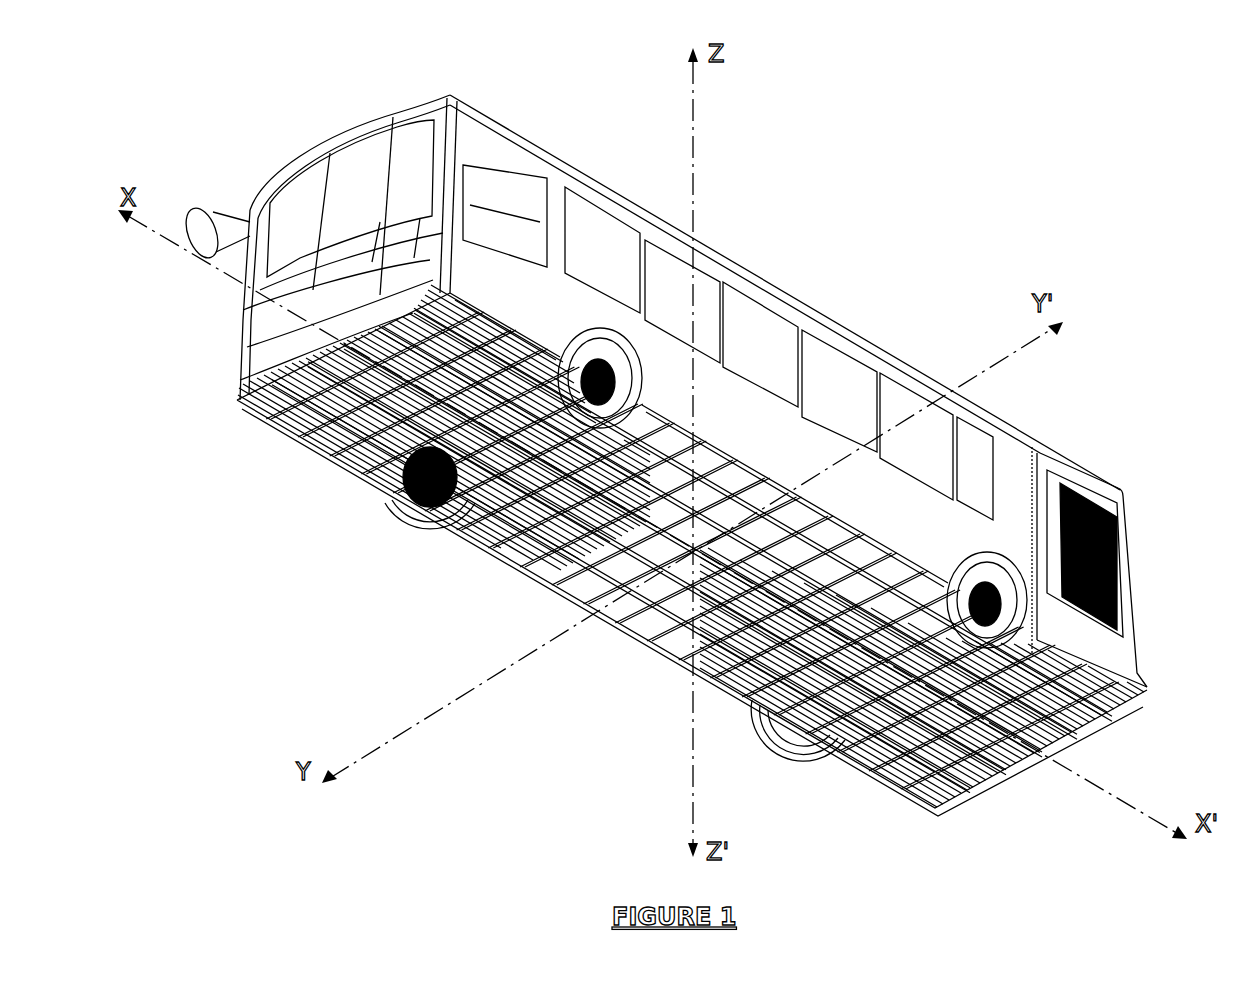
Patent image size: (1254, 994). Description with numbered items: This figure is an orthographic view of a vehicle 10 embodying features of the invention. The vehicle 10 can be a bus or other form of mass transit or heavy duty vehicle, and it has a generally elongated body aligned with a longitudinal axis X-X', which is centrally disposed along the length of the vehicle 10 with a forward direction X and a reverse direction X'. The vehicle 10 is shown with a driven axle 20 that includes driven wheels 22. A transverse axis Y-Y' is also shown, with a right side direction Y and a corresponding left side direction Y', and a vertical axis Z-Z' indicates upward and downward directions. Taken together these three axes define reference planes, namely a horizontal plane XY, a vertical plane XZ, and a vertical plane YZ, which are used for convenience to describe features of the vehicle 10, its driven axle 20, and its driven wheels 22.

The vehicle 10 is at (858, 322).
The driven axle 20 is at (915, 752).
The driven wheels 22 is at (1000, 633).